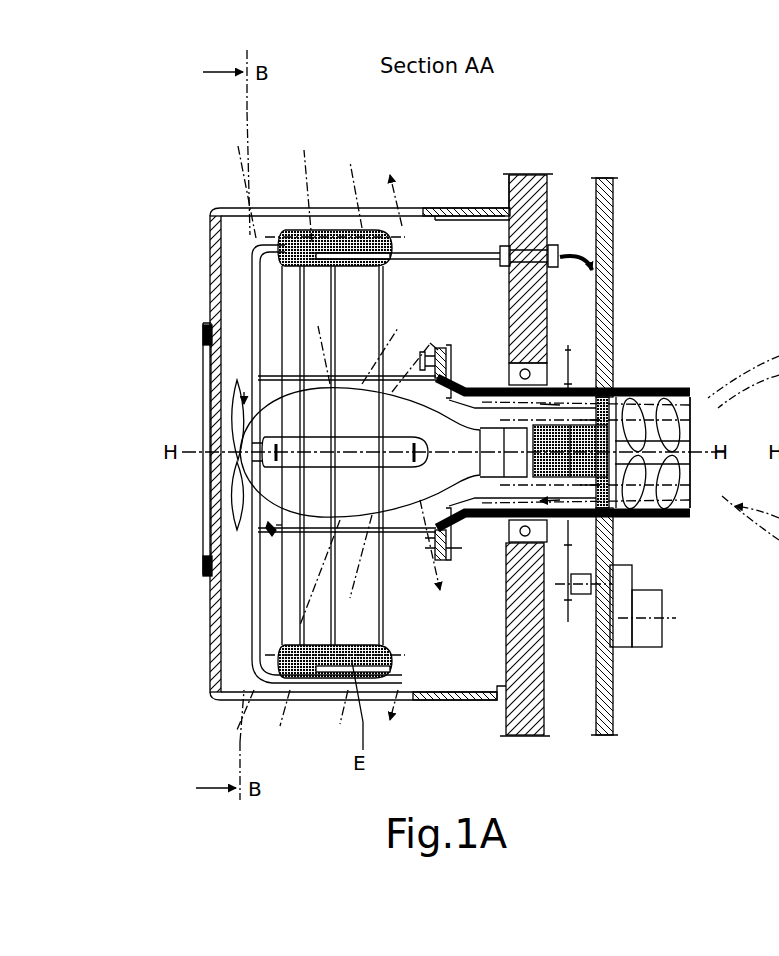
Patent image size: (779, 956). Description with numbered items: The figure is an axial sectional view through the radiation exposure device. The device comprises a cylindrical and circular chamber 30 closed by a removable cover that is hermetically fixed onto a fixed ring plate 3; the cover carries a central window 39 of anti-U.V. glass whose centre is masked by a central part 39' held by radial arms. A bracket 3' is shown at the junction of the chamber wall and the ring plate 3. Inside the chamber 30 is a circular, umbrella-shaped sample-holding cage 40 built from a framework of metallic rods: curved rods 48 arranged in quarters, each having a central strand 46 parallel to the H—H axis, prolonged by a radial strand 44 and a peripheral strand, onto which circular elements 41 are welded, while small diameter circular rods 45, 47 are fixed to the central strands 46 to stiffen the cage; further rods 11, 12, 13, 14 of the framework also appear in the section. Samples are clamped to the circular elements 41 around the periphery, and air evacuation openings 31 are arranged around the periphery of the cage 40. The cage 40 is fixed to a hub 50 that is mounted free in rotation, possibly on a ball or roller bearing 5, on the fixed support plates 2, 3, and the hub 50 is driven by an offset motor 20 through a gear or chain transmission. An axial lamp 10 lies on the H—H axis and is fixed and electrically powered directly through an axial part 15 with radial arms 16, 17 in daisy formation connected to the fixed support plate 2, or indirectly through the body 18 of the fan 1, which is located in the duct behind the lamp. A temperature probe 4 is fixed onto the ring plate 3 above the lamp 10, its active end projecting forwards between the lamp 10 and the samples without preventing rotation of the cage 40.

The fan 1 is at (692, 415).
The fixed support plate 2 is at (614, 205).
The ring plate 3 is at (543, 426).
The mounting bracket 3' is at (472, 209).
The temperature probe 4 is at (512, 200).
The ball or roller bearing 5 is at (548, 364).
The lamp 10 is at (238, 458).
The support strut 11 is at (310, 388).
The support strut 12 is at (356, 470).
The lower crossbar 13 is at (279, 534).
The lower strut 14 is at (384, 464).
The axial part 15 is at (600, 466).
The radial arm 16 is at (647, 388).
The radial arm 17 is at (643, 518).
The fan body 18 is at (690, 390).
The offset motor 20 is at (672, 637).
The chamber 30 is at (212, 210).
The air evacuation opening 31 is at (256, 245).
The central window 39 is at (186, 422).
The central part 39' is at (196, 449).
The sample-holding cage 40 is at (430, 342).
The circular element 41 is at (378, 233).
The radial strand 44 is at (743, 437).
The small diameter circular rod 45 is at (272, 534).
The central strand 46 is at (290, 546).
The small diameter circular rod 47 is at (412, 540).
The curved rod 48 is at (432, 348).
The hub 50 is at (466, 372).